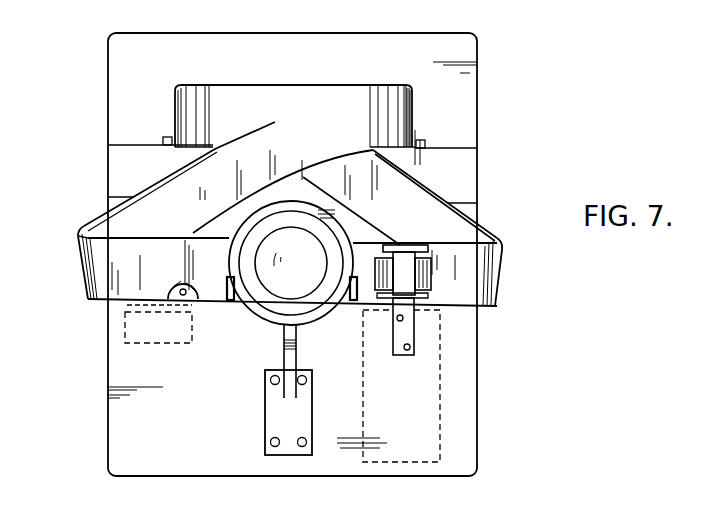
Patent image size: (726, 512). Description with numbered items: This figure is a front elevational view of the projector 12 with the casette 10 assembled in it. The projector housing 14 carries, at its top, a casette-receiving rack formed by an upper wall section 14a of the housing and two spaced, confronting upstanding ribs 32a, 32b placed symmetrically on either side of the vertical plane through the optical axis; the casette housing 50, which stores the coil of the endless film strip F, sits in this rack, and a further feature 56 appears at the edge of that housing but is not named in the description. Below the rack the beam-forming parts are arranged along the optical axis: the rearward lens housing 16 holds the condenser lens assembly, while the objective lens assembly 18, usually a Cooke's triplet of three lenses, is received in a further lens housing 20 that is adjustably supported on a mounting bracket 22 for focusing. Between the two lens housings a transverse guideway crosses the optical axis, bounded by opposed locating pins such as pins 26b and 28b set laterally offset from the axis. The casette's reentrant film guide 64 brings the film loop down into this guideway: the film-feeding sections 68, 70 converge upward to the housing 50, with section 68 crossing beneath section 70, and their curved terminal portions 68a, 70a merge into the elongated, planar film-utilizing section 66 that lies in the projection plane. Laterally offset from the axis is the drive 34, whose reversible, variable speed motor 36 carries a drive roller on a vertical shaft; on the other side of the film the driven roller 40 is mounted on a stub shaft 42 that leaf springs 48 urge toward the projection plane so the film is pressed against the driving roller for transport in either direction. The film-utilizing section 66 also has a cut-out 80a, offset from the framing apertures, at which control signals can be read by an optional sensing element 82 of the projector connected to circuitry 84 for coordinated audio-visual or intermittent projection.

The casette 10 is at (362, 86).
The projector 12 is at (108, 409).
The projector housing 14 is at (117, 426).
The upper wall section 14a is at (450, 148).
The lens housing 16 is at (251, 208).
The objective lens assembly 18 is at (277, 294).
The further lens housing 20 is at (255, 298).
The mounting bracket 22 is at (285, 353).
The locating pin 26b is at (235, 288).
The locating pin 28b is at (329, 273).
The upstanding rib 32a is at (163, 137).
The upstanding rib 32b is at (422, 141).
The drive 34 is at (365, 305).
The motor 36 is at (430, 416).
The driven roller 40 is at (432, 273).
The stub shaft 42 is at (405, 245).
The leaf spring 48 is at (425, 250).
The housing 50 is at (300, 85).
The panel edge 56 is at (410, 108).
The reentrant film guide 64 is at (85, 298).
The film-utilizing section 66 is at (162, 241).
The film-feeding section 68 is at (427, 193).
The curved terminal portion 68a is at (505, 264).
The film-feeding section 70 is at (180, 177).
The curved terminal portion 70a is at (82, 268).
The cut-out or opening 80a is at (190, 288).
The sensing element 82 is at (158, 305).
The circuitry 84 is at (157, 344).
The film strip F is at (183, 283).